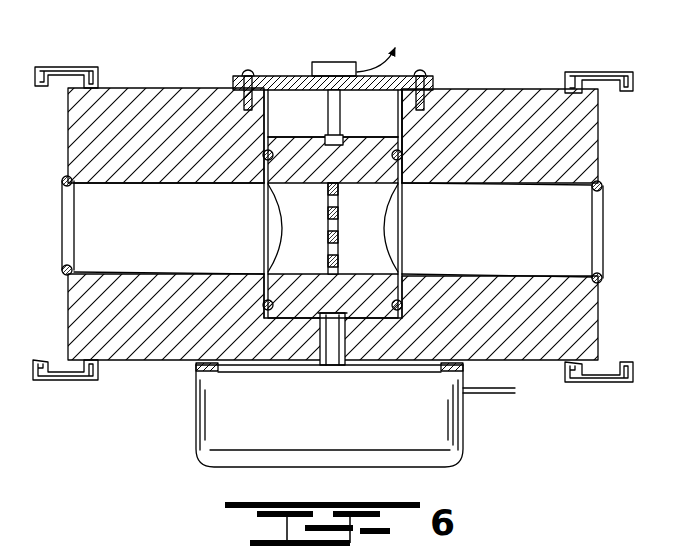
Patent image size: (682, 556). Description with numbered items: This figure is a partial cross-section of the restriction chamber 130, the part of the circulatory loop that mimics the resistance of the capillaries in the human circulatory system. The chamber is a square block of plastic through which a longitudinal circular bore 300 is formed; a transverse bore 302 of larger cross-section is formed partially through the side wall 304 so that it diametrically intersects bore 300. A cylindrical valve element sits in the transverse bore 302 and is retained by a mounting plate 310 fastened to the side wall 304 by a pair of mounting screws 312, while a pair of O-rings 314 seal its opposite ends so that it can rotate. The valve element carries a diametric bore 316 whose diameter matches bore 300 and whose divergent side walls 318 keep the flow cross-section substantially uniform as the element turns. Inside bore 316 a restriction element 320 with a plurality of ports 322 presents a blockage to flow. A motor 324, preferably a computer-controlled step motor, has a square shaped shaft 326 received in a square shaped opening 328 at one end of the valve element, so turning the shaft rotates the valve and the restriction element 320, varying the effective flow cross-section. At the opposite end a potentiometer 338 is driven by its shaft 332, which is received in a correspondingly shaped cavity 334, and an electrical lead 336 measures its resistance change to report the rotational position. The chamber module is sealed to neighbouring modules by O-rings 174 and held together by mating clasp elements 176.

The restriction chamber 130 is at (162, 70).
The O-rings 174 is at (73, 194).
The mating clasp elements 176 is at (70, 67).
The longitudinal circular bore 300 is at (172, 235).
The transverse bore 302 is at (402, 92).
The side wall 304 is at (540, 96).
The mounting plate 310 is at (265, 76).
The mounting screws 312 is at (250, 70).
The O-rings 314 is at (402, 302).
The diametric bore 316 is at (368, 234).
The divergent side walls 318 is at (282, 262).
The restriction element 320 is at (328, 204).
The ports 322 is at (340, 208).
The motor 324 is at (462, 446).
The square shaped shaft 326 is at (322, 348).
The square shaped opening 328 is at (346, 316).
The shaft 332 is at (338, 108).
The cavity 334 is at (322, 126).
The electrical lead 336 is at (378, 56).
The potentiometer 338 is at (340, 62).